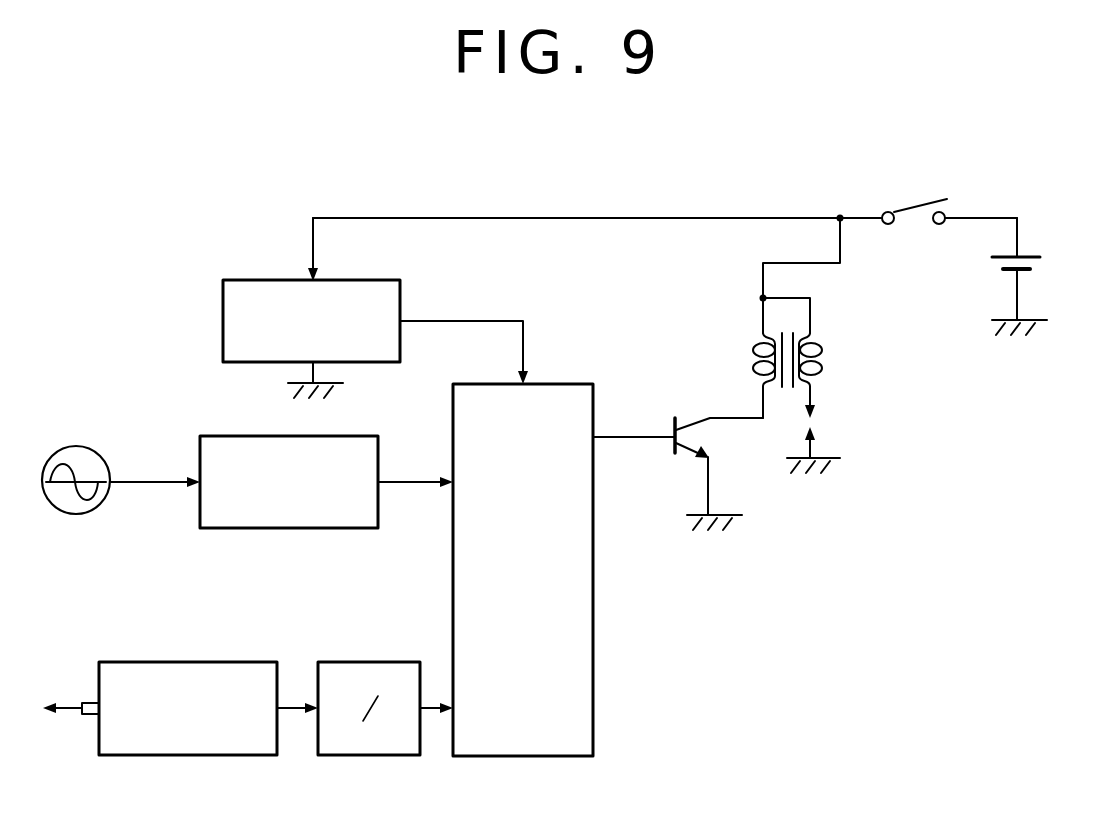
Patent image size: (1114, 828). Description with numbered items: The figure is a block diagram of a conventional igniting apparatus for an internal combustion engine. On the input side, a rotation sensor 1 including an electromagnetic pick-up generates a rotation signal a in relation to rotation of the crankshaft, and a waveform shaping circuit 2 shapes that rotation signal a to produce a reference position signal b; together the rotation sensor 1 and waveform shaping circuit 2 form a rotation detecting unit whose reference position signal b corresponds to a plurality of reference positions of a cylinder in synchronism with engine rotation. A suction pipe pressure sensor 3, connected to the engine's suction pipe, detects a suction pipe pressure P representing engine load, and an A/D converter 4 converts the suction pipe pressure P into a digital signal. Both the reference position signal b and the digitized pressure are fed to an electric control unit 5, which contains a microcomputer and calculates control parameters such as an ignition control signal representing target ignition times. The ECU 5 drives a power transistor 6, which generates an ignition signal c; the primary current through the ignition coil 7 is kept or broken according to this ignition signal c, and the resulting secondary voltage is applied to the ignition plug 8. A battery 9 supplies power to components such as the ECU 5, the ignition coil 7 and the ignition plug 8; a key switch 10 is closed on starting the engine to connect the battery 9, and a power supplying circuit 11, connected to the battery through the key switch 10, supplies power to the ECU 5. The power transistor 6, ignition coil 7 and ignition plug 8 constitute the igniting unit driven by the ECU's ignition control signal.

The rotation sensor 1 is at (77, 514).
The waveform shaping circuit 2 is at (322, 529).
The suction pipe pressure sensor 3 is at (215, 756).
The A/D converter 4 is at (375, 756).
The electric control unit (ECU) 5 is at (594, 655).
The power transistor 6 is at (698, 437).
The ignition coil 7 is at (763, 332).
The ignition plug 8 is at (817, 417).
The battery 9 is at (1033, 252).
The key switch 10 is at (912, 201).
The power supplying circuit 11 is at (401, 303).
The rotation signal a is at (147, 478).
The reference position signal b is at (413, 481).
The ignition signal c is at (723, 417).
The suction pipe pressure P is at (302, 704).